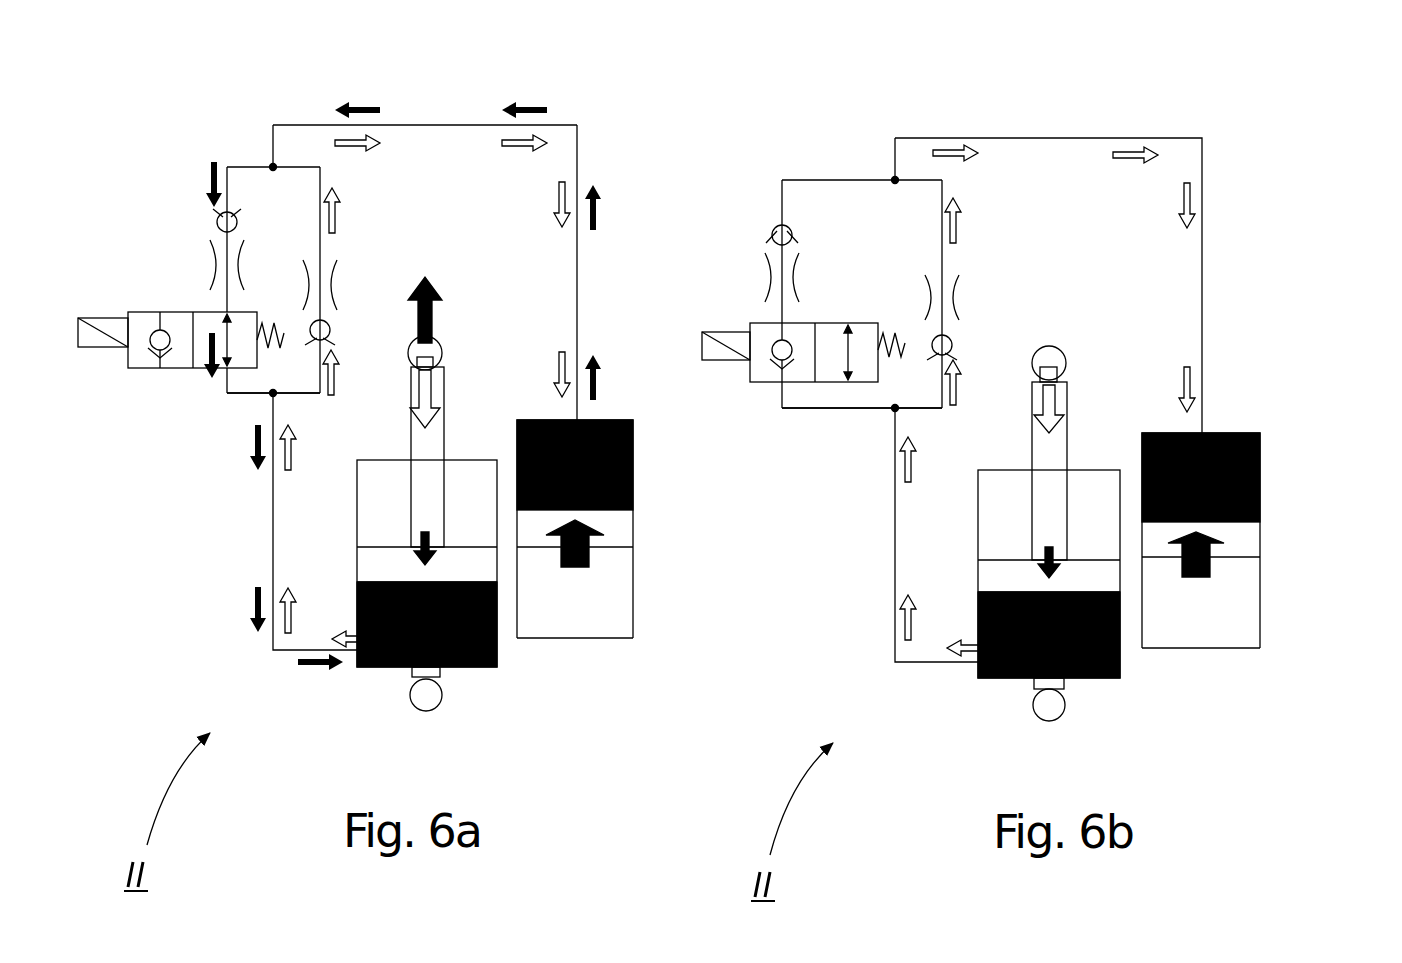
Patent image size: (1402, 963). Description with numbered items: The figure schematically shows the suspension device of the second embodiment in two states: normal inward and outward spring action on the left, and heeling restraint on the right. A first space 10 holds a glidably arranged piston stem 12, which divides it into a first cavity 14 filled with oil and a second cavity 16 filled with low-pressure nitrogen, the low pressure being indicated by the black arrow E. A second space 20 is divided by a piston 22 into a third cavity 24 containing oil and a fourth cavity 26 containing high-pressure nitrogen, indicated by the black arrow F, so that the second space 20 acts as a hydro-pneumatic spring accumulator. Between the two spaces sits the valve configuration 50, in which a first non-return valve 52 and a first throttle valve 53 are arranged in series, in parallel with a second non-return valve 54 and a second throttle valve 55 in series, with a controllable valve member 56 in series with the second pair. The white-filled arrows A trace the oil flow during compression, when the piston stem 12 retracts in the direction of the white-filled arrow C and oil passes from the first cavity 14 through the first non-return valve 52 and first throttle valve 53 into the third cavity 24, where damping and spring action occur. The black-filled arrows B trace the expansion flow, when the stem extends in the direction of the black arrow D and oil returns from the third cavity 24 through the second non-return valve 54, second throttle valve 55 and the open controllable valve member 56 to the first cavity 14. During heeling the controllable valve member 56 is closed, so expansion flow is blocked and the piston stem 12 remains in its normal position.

In FIG. 6A, the first space 10 is at (462, 670).
In FIG. 6B, the first space 10 is at (1090, 682).
In FIG. 6A, the piston stem 12 is at (403, 478).
In FIG. 6B, the piston stem 12 is at (1030, 489).
In FIG. 6A, the first cavity 14 is at (388, 668).
In FIG. 6B, the first cavity 14 is at (1013, 678).
In FIG. 6A, the second cavity 16 is at (378, 525).
In FIG. 6B, the second cavity 16 is at (1003, 535).
In FIG. 6A, the second space 20 is at (637, 597).
In FIG. 6B, the second space 20 is at (1217, 653).
In FIG. 6A, the piston 22 is at (618, 530).
In FIG. 6B, the piston 22 is at (1230, 540).
In FIG. 6A, the third cavity 24 is at (605, 420).
In FIG. 6B, the third cavity 24 is at (1235, 433).
In FIG. 6A, the fourth cavity 26 is at (563, 608).
In FIG. 6B, the fourth cavity 26 is at (1190, 617).
In FIG. 6A, the valve configuration 50 is at (188, 167).
In FIG. 6B, the valve configuration 50 is at (760, 198).
In FIG. 6A, the first non-return valve 52 is at (228, 380).
In FIG. 6B, the first non-return valve 52 is at (852, 405).
In FIG. 6A, the first throttle valve 53 is at (342, 282).
In FIG. 6B, the first throttle valve 53 is at (957, 303).
In FIG. 6A, the second non-return valve 54 is at (240, 208).
In FIG. 6B, the second non-return valve 54 is at (792, 208).
In FIG. 6A, the second throttle valve 55 is at (203, 263).
In FIG. 6B, the second throttle valve 55 is at (758, 272).
In FIG. 6A, the controllable valve member 56 is at (192, 382).
In FIG. 6B, the controllable valve member 56 is at (813, 394).
In FIG. 6A, the white-filled arrows A is at (528, 145).
In FIG. 6B, the white-filled arrows A is at (1140, 152).
In FIG. 6A, the black-filled arrows B is at (520, 110).
In FIG. 6A, the white-filled arrow C is at (445, 360).
In FIG. 6B, the white-filled arrow C is at (1065, 377).
In FIG. 6A, the black arrow D is at (440, 297).
In FIG. 6A, the black arrow E is at (435, 560).
In FIG. 6B, the black arrow E is at (1060, 565).
In FIG. 6A, the black arrow F is at (585, 570).
In FIG. 6B, the black arrow F is at (1210, 580).